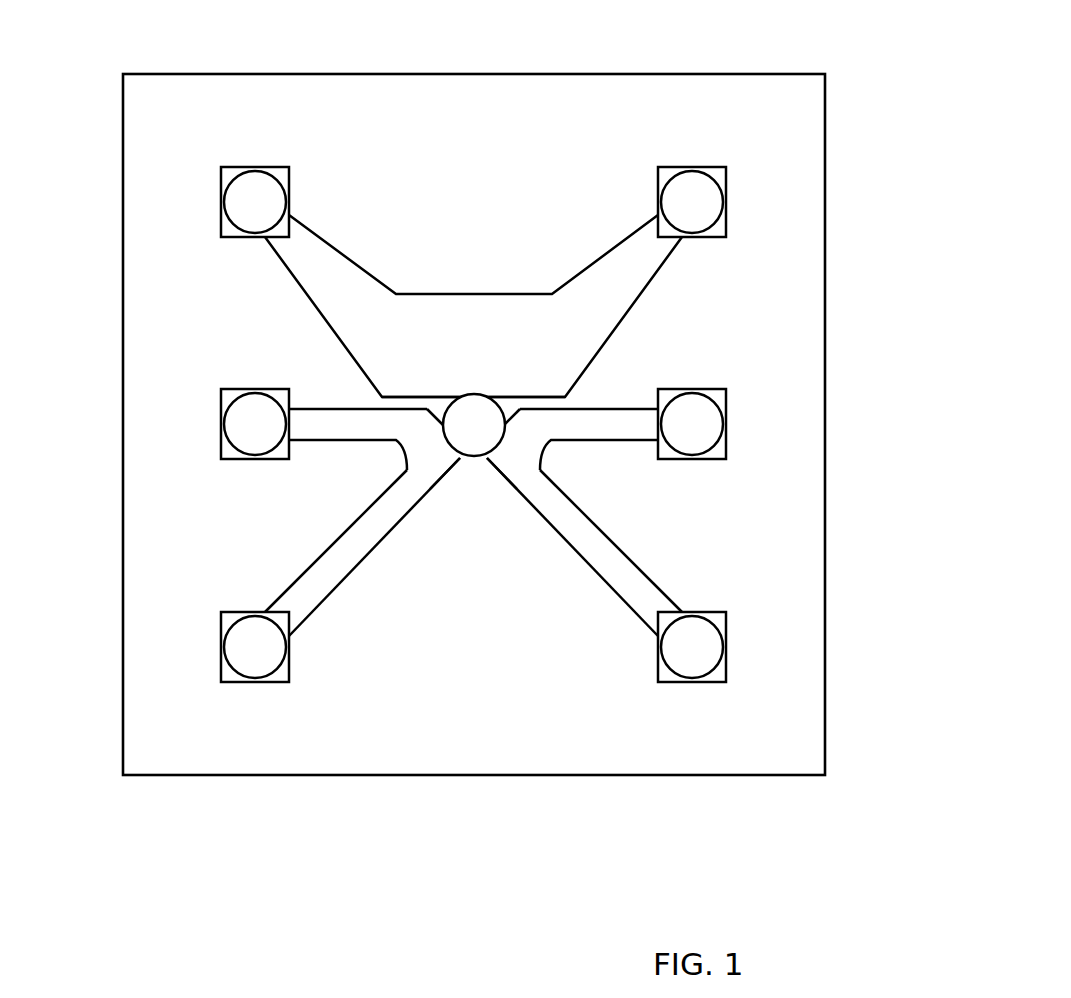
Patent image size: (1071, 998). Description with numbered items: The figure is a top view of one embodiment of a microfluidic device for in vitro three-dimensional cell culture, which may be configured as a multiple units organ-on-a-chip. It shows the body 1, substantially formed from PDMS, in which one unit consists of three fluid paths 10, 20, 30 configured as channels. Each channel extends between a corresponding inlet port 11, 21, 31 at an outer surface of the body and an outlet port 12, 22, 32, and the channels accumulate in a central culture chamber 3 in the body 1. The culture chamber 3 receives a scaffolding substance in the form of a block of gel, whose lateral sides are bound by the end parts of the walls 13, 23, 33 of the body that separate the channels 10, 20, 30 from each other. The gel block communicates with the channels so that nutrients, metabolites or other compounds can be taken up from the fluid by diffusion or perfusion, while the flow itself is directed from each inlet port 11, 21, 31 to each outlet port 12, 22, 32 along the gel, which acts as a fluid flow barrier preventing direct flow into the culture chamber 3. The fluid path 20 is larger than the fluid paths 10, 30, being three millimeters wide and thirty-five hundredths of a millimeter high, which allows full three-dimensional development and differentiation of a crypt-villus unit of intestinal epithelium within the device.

The body 1 is at (110, 134).
The central culture chamber 3 is at (474, 425).
The fluid path 10 is at (343, 559).
The inlet port 11 is at (255, 424).
The outlet port 12 is at (255, 647).
The wall 13 is at (439, 409).
The fluid path 20 is at (469, 331).
The inlet port 21 is at (255, 202).
The outlet port 22 is at (692, 202).
The wall 23 is at (509, 409).
The fluid path 30 is at (604, 559).
The inlet port 31 is at (692, 424).
The outlet port 32 is at (692, 647).
The wall 33 is at (462, 478).